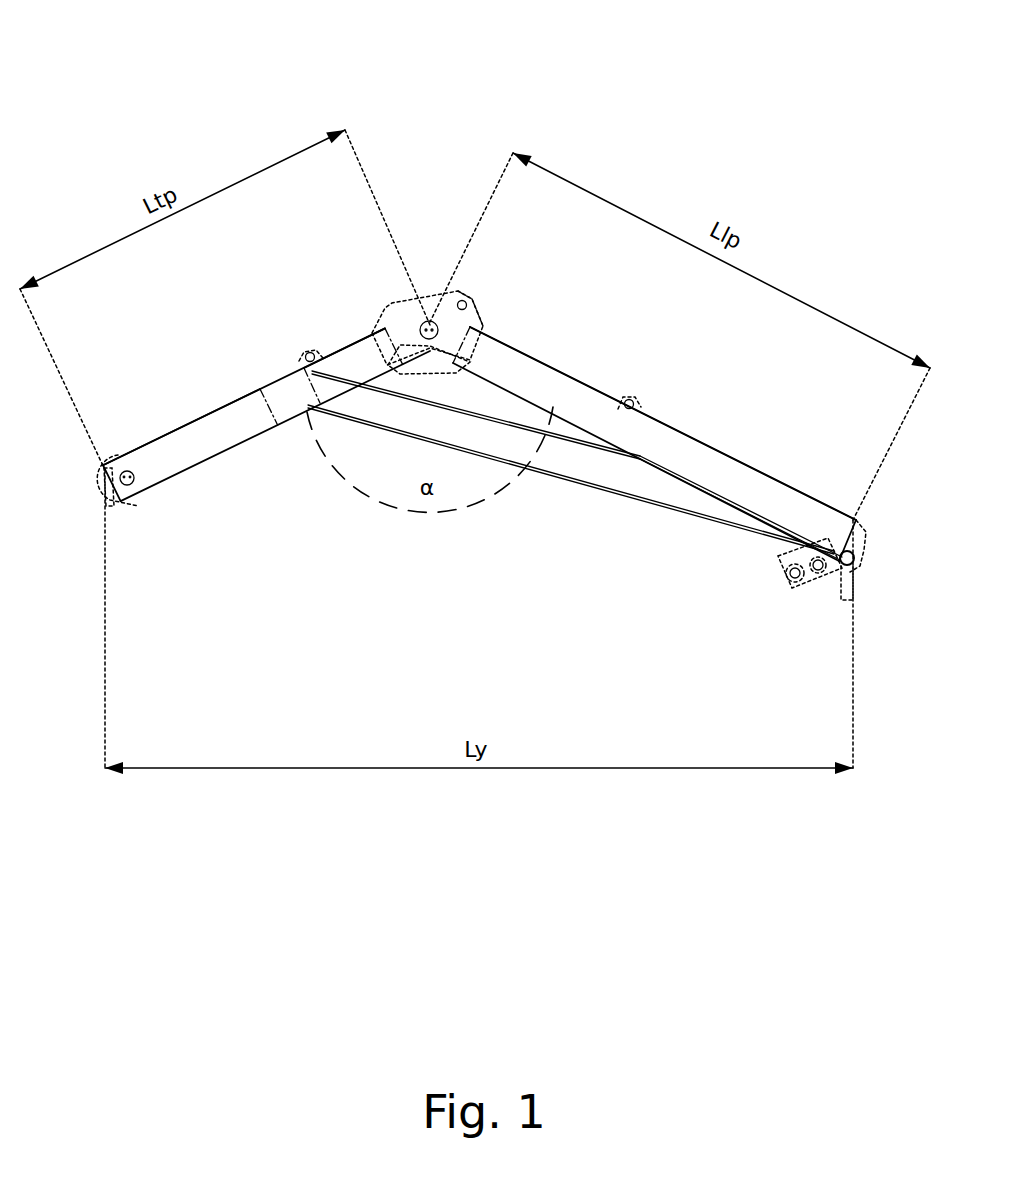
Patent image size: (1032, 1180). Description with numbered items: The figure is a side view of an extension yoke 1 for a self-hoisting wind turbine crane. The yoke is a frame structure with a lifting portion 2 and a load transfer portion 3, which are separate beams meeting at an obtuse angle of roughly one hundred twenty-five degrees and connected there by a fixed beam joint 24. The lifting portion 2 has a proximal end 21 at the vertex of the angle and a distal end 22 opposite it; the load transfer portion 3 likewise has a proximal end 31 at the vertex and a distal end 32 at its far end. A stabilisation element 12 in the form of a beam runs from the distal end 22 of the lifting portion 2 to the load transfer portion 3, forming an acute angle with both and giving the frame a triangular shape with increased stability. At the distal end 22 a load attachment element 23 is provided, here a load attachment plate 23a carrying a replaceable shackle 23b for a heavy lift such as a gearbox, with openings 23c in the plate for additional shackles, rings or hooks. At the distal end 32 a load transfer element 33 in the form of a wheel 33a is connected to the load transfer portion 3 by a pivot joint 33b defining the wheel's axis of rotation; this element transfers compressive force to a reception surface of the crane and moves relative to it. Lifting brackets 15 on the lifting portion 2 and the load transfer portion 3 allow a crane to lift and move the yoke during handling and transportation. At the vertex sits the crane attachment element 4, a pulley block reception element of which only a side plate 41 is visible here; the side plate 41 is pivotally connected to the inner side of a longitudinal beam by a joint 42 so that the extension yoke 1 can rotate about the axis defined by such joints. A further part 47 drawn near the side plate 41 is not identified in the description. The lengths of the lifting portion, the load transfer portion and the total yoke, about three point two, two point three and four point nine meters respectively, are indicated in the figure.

The extension yoke 1 is at (652, 122).
The lifting portion 2 is at (658, 328).
The load transfer portion 3 is at (228, 322).
The crane attachment element 4 is at (428, 260).
The stabilisation element 12 is at (535, 468).
The lifting brackets 15 is at (311, 355).
The proximal end 21 is at (488, 335).
The distal end 22 is at (812, 507).
The load attachment element 23 is at (746, 589).
The load attachment plate 23a is at (850, 517).
The shackle 23b is at (846, 598).
The openings 23c is at (795, 580).
The fixed beam joint 24 is at (403, 340).
The proximal end 31 is at (370, 333).
The distal end 32 is at (143, 452).
The load transfer element 33 is at (170, 505).
The wheel 33a is at (107, 490).
The pivot joint 33b is at (130, 488).
The side plate 41 is at (479, 315).
The joint 42 is at (427, 318).
The hub fastener 47 is at (464, 300).